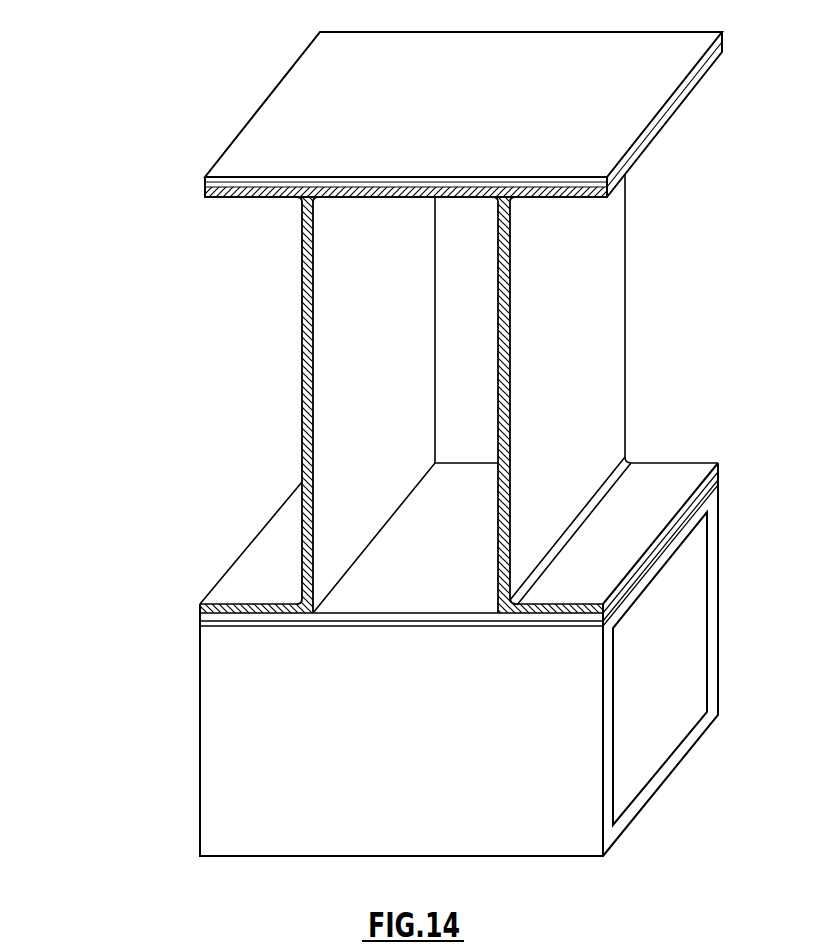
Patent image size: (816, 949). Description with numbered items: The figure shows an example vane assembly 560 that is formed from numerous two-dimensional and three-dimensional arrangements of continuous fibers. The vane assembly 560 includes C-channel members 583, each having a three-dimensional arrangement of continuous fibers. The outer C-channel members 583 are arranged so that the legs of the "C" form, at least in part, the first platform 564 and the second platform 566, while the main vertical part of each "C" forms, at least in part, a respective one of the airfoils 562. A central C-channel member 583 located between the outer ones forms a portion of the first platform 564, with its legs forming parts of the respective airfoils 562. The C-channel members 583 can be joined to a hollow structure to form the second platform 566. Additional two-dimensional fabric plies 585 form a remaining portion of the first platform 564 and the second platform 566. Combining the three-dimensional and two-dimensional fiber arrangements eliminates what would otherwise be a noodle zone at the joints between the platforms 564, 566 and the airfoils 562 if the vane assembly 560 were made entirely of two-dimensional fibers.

The vane assembly 560 is at (122, 507).
The airfoils 562 is at (286, 402).
The first platform 564 is at (658, 127).
The second platform 566 is at (622, 793).
The C-channel members 583 is at (268, 270).
The 2D fabric plies 585 is at (203, 177).